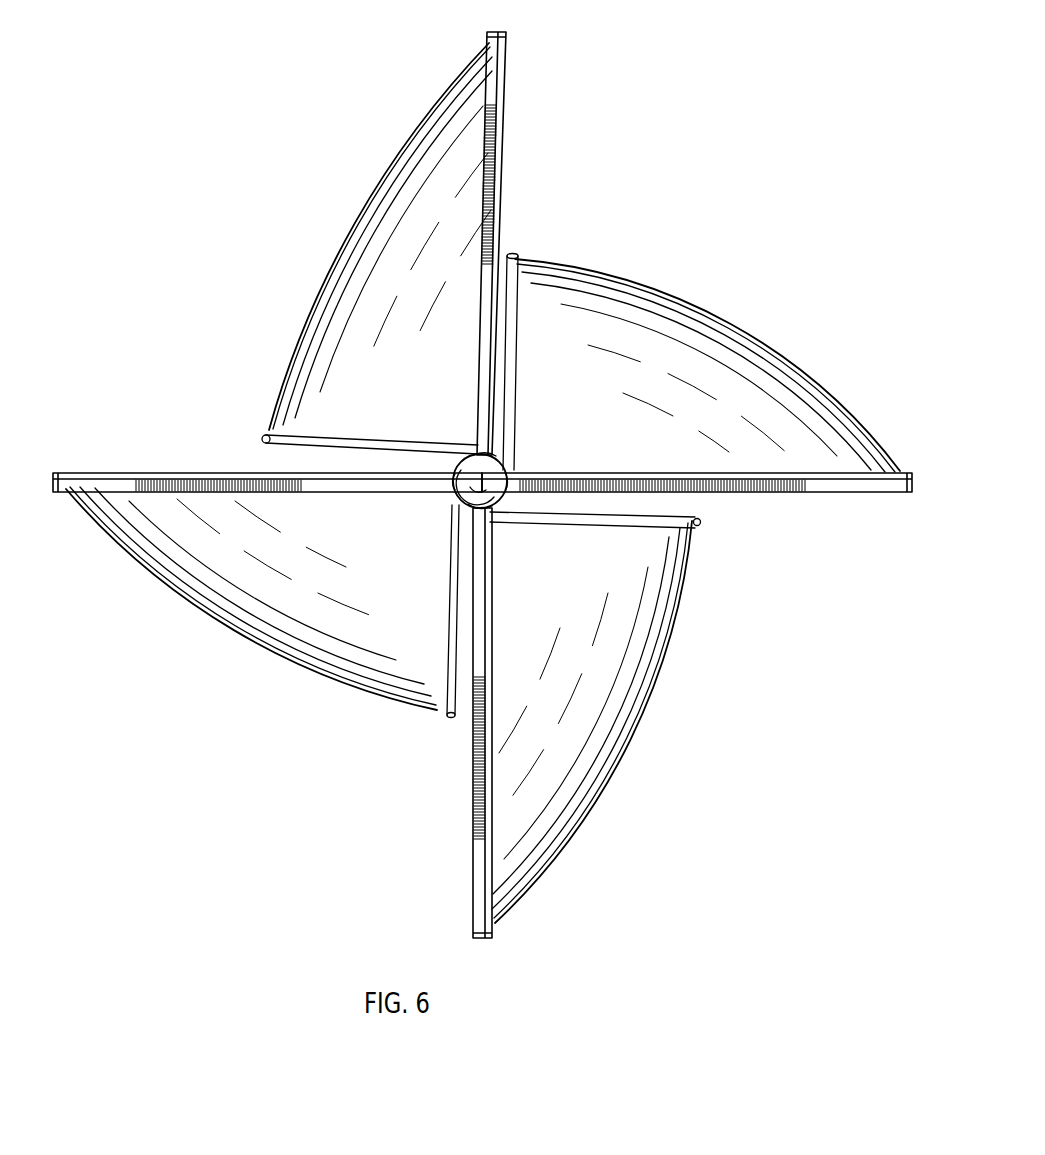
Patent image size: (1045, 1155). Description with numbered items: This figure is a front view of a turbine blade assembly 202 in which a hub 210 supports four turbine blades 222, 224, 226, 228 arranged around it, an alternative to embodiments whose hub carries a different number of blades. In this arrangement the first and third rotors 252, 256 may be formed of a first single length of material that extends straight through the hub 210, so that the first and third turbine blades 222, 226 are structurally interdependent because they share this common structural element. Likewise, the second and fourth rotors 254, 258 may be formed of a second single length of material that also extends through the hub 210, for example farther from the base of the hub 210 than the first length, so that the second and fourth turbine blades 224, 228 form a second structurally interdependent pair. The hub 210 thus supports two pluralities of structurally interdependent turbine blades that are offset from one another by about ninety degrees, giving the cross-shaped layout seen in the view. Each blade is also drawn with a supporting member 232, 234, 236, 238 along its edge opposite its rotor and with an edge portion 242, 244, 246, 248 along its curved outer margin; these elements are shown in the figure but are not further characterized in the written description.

The wind turbine rotor assembly 202 is at (750, 165).
The hub 210 is at (505, 473).
The first turbine blade 222 is at (707, 365).
The second turbine blade 224 is at (631, 722).
The third turbine blade 226 is at (251, 639).
The fourth turbine blade 228 is at (372, 236).
The first support rod 232 is at (515, 295).
The second support rod 234 is at (682, 502).
The third support rod 236 is at (458, 672).
The fourth support rod 238 is at (275, 453).
The first sail edge strip 242 is at (717, 367).
The second sail edge strip 244 is at (628, 666).
The third sail edge strip 246 is at (197, 610).
The fourth sail edge strip 248 is at (357, 283).
The first rotor 252 is at (820, 483).
The second rotor 254 is at (483, 820).
The third rotor 256 is at (172, 472).
The fourth rotor 258 is at (497, 135).